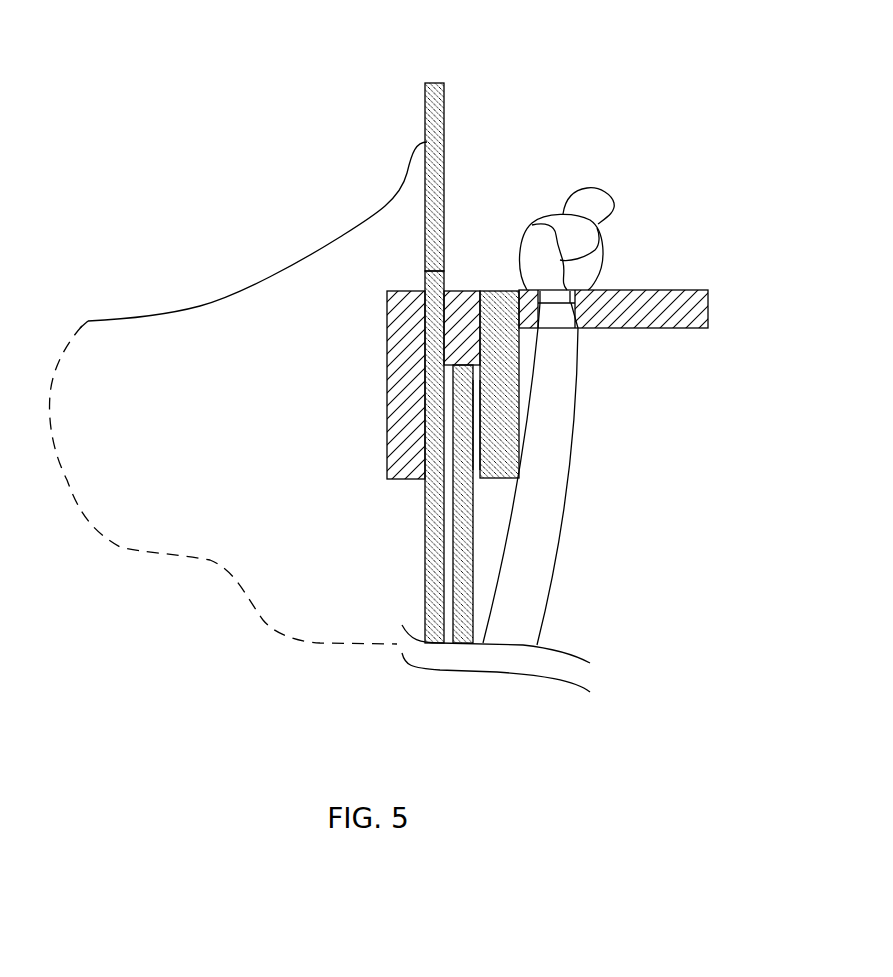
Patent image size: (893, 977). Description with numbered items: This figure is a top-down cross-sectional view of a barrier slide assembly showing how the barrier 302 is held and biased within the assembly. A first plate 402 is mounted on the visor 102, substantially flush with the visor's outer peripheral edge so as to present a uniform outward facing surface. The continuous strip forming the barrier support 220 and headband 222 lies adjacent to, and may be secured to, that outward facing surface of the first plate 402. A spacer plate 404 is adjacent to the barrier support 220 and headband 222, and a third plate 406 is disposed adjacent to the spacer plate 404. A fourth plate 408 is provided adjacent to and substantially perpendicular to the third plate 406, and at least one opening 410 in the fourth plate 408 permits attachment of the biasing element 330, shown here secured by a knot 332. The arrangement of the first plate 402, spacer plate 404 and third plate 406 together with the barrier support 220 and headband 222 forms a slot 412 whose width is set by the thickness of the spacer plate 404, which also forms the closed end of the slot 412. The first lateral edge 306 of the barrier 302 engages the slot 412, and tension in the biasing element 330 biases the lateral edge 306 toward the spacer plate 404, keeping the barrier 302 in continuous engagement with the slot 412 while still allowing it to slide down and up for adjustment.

The visor 102 is at (200, 328).
The barrier support 220 is at (425, 572).
The headband 222 is at (445, 103).
The barrier 302 is at (473, 590).
The first lateral edge 306 is at (463, 365).
The biasing element 330 is at (537, 505).
The knot 332 is at (605, 237).
The first plate 402 is at (387, 365).
The spacer plate 404 is at (453, 290).
The third plate 406 is at (519, 385).
The fourth plate 408 is at (708, 307).
The opening 410 is at (555, 312).
The slot 412 is at (476, 409).